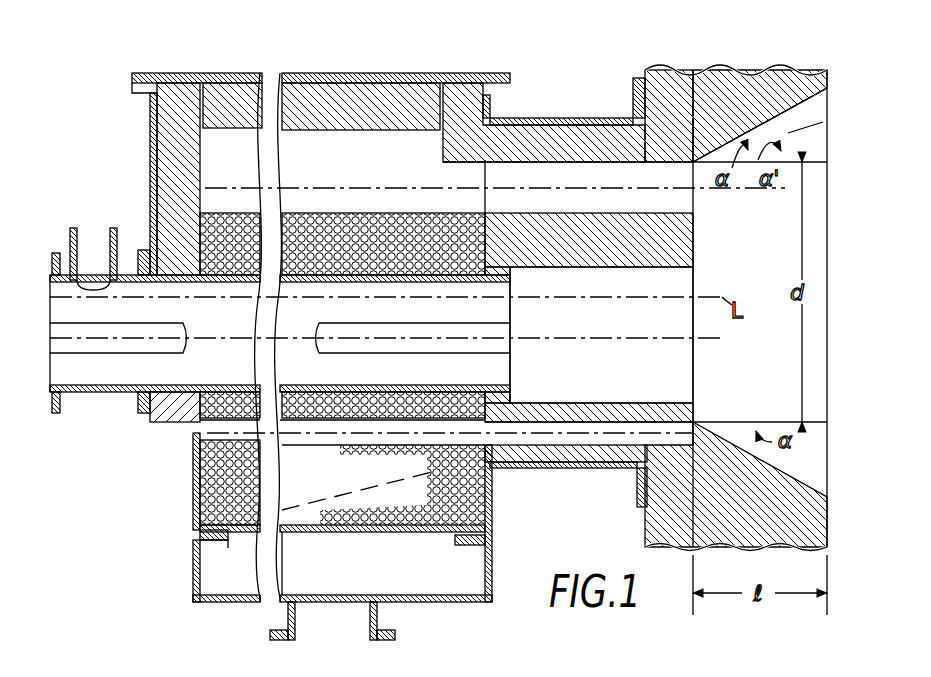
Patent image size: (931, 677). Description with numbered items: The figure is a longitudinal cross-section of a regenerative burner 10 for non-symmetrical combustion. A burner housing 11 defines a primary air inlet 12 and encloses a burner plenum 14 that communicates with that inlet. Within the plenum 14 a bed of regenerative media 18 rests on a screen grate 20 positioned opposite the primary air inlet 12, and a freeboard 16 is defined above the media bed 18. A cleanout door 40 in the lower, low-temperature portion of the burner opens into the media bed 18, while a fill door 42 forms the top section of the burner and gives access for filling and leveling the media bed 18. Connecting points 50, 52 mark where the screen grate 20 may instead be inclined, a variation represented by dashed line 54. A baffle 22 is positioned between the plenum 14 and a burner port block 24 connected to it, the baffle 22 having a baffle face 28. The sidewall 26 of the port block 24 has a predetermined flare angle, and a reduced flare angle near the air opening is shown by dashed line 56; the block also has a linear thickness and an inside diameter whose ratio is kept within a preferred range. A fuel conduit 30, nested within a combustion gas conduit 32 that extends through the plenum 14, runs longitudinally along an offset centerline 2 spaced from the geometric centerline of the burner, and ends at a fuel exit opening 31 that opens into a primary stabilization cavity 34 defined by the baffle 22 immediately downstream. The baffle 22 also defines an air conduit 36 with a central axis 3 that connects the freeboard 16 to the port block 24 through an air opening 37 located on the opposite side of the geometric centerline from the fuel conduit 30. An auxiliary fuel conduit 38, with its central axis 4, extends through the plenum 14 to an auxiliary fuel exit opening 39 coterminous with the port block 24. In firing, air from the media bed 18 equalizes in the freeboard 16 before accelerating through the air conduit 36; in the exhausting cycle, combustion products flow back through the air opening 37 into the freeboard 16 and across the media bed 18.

The regenerative burner 10 is at (213, 66).
The fill door 42 is at (353, 72).
The burner housing 11 is at (548, 118).
The air conduit 36 is at (496, 168).
The baffle 22 is at (660, 69).
The burner port block 24 is at (722, 69).
The dashed line 56 is at (800, 122).
The sidewall 26 is at (822, 124).
The freeboard 16 is at (495, 182).
The bed of regenerative media 18 is at (383, 244).
The air opening 37 is at (699, 193).
The central axis 3 is at (757, 190).
The baffle face 28 is at (699, 252).
The primary stabilization cavity 34 is at (601, 335).
The fuel exit opening 31 is at (520, 353).
The fuel conduit 30 is at (390, 354).
The offset centerline 2 is at (722, 339).
The central axis 4 is at (699, 422).
The auxiliary fuel exit opening 39 is at (725, 419).
The combustion gas conduit 32 is at (104, 394).
The cleanout door 40 is at (186, 461).
The dashed line 54 is at (345, 492).
The connecting point 52 is at (500, 466).
The auxiliary fuel conduit 38 is at (585, 446).
The connecting point 50 is at (258, 517).
The screen grate 20 is at (245, 541).
The burner plenum 14 is at (452, 595).
The primary air inlet 12 is at (296, 630).